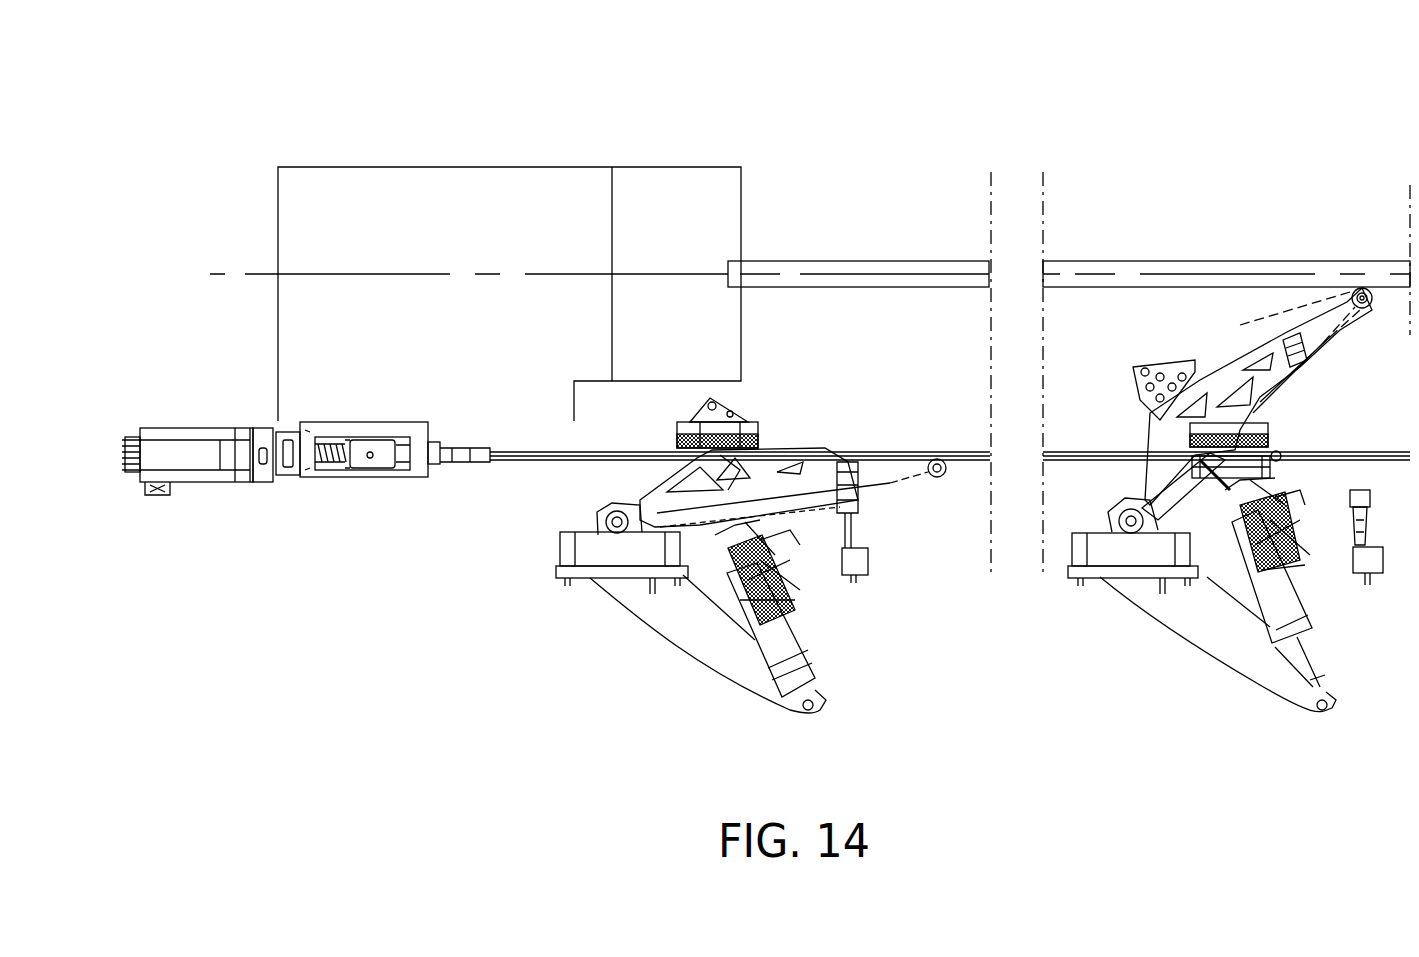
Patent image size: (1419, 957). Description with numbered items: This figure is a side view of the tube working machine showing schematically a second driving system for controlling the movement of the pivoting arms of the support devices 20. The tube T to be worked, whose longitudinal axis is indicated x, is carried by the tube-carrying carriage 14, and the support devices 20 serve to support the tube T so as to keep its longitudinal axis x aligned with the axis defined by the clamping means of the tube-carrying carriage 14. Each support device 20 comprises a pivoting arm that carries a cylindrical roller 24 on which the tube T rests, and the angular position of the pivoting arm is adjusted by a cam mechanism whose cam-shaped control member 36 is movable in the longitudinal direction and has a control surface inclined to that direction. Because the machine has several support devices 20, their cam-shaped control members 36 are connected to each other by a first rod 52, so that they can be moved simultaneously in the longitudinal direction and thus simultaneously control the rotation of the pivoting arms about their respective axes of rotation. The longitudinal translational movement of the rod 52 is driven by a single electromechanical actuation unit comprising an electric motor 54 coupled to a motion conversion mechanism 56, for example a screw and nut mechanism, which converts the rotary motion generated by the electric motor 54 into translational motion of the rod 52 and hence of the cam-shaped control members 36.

The tube-carrying carriage 14 is at (525, 165).
The tube T is at (874, 258).
The longitudinal axis of the tube x is at (1130, 268).
The first rod 52 is at (960, 450).
The electric motor 54 is at (207, 478).
The motion conversion mechanism 56 is at (383, 477).
The support device 20 is at (1240, 325).
The cylindrical roller 24 is at (1378, 285).
The cam-shaped control member 36 is at (1270, 470).